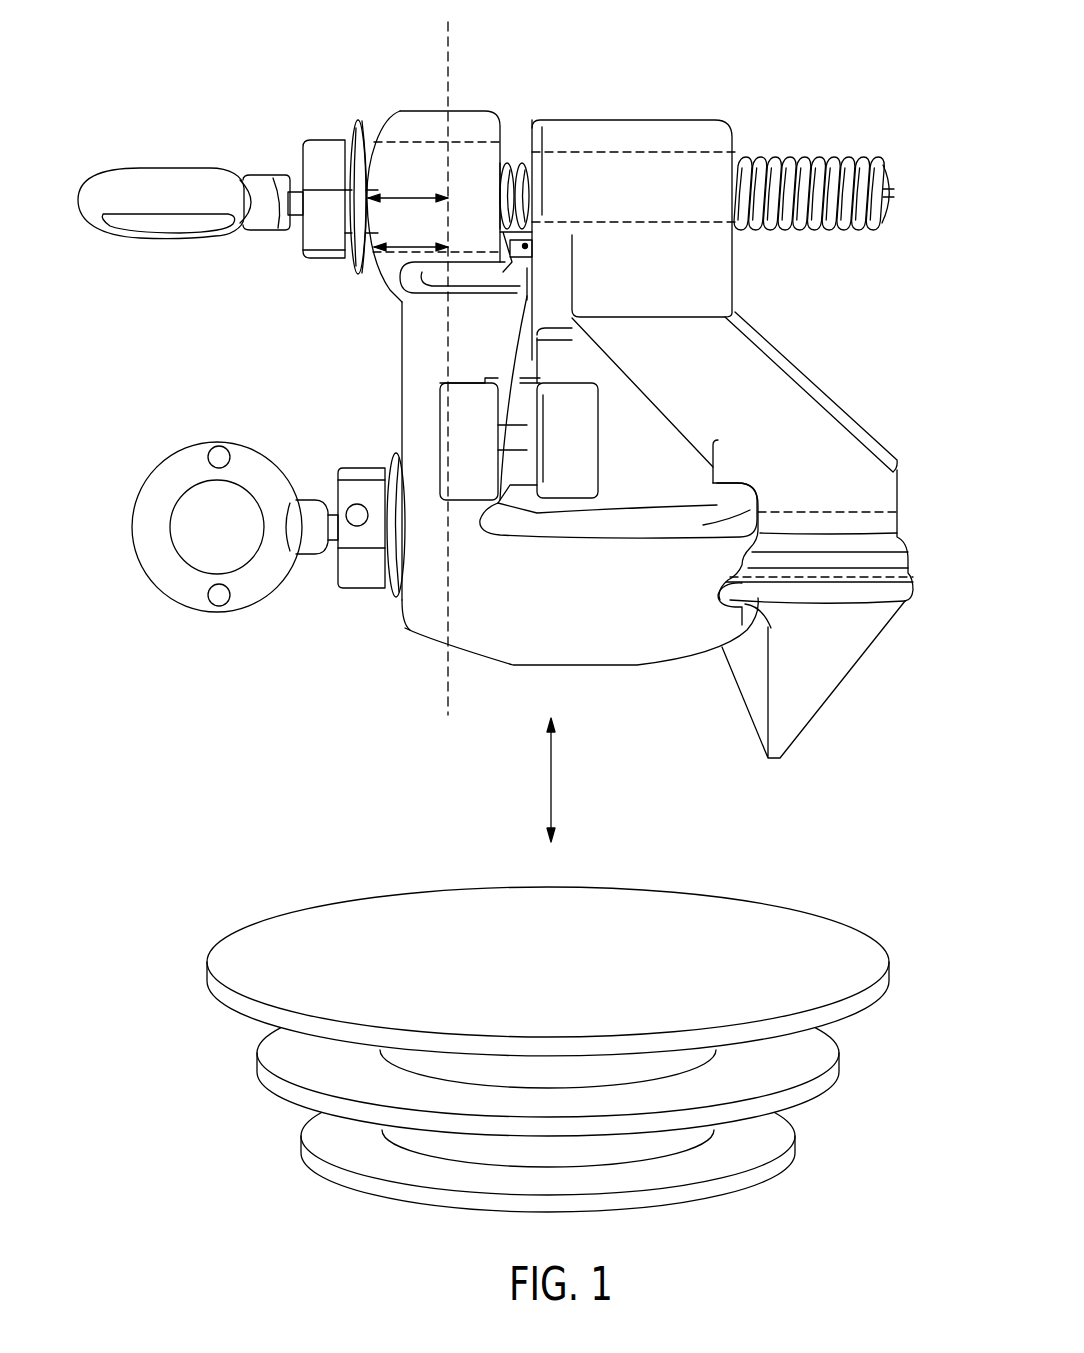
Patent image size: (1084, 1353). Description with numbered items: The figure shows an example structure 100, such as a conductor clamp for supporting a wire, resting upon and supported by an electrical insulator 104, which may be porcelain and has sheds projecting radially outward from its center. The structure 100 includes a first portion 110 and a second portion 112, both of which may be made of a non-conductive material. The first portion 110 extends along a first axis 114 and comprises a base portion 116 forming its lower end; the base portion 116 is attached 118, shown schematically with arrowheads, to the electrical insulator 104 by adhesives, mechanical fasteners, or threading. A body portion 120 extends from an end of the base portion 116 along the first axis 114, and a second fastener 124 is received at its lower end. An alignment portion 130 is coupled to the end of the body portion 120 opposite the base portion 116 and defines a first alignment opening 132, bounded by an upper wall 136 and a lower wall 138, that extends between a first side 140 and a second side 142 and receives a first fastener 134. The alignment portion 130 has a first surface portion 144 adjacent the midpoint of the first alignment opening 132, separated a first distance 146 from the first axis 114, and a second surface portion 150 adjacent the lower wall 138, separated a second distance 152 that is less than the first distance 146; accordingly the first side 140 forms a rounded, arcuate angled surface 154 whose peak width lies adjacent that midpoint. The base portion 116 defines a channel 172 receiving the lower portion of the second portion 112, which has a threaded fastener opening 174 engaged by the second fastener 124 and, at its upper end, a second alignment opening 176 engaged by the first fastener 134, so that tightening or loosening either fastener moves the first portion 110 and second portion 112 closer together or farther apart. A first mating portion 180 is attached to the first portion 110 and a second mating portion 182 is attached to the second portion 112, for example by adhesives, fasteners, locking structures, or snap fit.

The structure 100 is at (138, 60).
The electrical insulator 104 is at (222, 957).
The first portion 110 is at (430, 637).
The second portion 112 is at (772, 362).
The first axis 114 is at (450, 72).
The base portion 116 is at (632, 648).
The attachment 118 is at (552, 782).
The body portion 120 is at (410, 412).
The second fastener 124 is at (205, 600).
The alignment portion 130 is at (470, 120).
The first alignment opening 132 is at (412, 140).
The first fastener 134 is at (183, 185).
The upper wall 136 is at (432, 140).
The lower wall 138 is at (390, 262).
The first side 140 is at (388, 130).
The second side 142 is at (522, 122).
The first surface portion 144 is at (372, 198).
The first distance 146 is at (420, 198).
The second surface portion 150 is at (356, 270).
The second distance 152 is at (420, 247).
The angled surface 154 is at (358, 120).
The channel 172 is at (770, 605).
The fastener opening 174 is at (866, 512).
The second alignment opening 176 is at (652, 150).
The first mating portion 180 is at (466, 490).
The second mating portion 182 is at (590, 467).